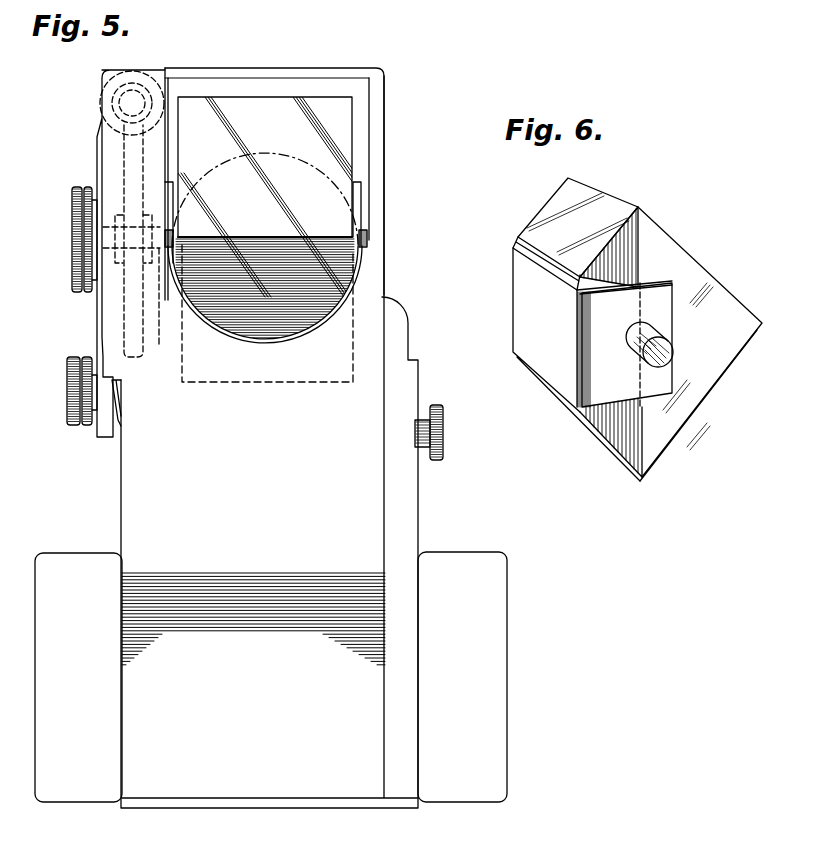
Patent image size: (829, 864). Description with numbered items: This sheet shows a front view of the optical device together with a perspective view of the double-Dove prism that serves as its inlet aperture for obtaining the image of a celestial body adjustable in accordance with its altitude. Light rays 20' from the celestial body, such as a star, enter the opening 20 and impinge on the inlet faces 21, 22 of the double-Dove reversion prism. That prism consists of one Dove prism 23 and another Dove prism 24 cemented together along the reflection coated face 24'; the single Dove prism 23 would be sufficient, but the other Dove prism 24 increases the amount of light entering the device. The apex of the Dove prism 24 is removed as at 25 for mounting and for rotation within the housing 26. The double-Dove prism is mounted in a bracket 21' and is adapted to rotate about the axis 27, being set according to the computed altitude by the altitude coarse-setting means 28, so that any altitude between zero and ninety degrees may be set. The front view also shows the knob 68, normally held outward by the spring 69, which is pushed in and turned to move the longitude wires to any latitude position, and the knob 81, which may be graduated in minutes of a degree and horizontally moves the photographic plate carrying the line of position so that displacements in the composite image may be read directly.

In FIG. 5, the opening 20 is at (240, 236).
In FIG. 5, the light rays 20' is at (267, 56).
In FIG. 6, the inlet face 21 is at (571, 232).
In FIG. 5, the bracket 21' is at (291, 267).
In FIG. 6, the bracket 21' is at (572, 364).
In FIG. 5, the inlet face 22 is at (333, 139).
In FIG. 6, the inlet face 22 is at (702, 260).
In FIG. 6, the Dove prism 23 is at (703, 384).
In FIG. 6, the Dove prism 24 is at (602, 383).
In FIG. 6, the reflection coated face 24' is at (642, 313).
In FIG. 6, the removed apex 25 is at (520, 245).
In FIG. 5, the housing 26 is at (125, 466).
In FIG. 5, the axis 27 is at (364, 233).
In FIG. 6, the axis 27 is at (673, 346).
In FIG. 5, the altitude coarse-setting means 28 is at (73, 212).
In FIG. 5, the knob 68 is at (68, 418).
In FIG. 5, the spring 69 is at (119, 424).
In FIG. 5, the knob 81 is at (443, 448).